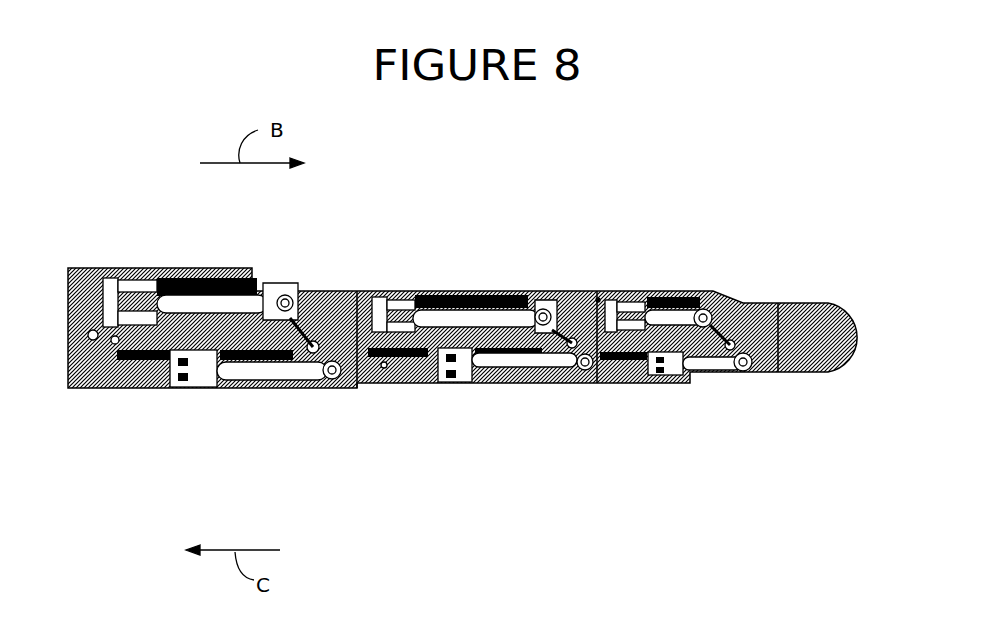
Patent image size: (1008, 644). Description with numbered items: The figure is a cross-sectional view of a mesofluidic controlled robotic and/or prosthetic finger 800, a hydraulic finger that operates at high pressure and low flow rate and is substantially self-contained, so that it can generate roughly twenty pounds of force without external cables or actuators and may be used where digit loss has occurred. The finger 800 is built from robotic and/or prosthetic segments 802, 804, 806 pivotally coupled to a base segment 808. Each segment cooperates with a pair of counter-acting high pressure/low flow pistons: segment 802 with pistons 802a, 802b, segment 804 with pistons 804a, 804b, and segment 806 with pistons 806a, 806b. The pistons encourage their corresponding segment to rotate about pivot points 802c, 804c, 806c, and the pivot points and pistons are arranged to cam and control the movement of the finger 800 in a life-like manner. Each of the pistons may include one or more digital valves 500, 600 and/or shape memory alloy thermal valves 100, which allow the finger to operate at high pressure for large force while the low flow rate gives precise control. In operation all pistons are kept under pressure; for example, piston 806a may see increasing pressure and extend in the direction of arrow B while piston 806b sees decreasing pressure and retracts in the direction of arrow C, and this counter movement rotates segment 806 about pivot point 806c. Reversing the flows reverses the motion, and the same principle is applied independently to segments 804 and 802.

The robotic and/or prosthetic finger 800 is at (553, 158).
The robotic and/or prosthetic segment 802 is at (797, 249).
The high pressure/low flow piston 802a is at (655, 295).
The high pressure/low flow piston 802b is at (687, 372).
The pivot point 802c is at (763, 372).
The robotic and/or prosthetic segment 804 is at (641, 234).
The high pressure/low flow piston 804a is at (423, 292).
The high pressure/low flow piston 804b is at (472, 383).
The pivot point 804c is at (573, 385).
The robotic and/or prosthetic segment 806 is at (455, 221).
The high pressure/low flow piston 806a is at (162, 268).
The high pressure/low flow piston 806b is at (223, 390).
The pivot point 806c is at (326, 390).
The base segment 808 is at (161, 215).
The shape memory alloy thermal valve 100 is at (598, 300).
The digital valve 500 is at (93, 340).
The digital valve 600 is at (384, 367).